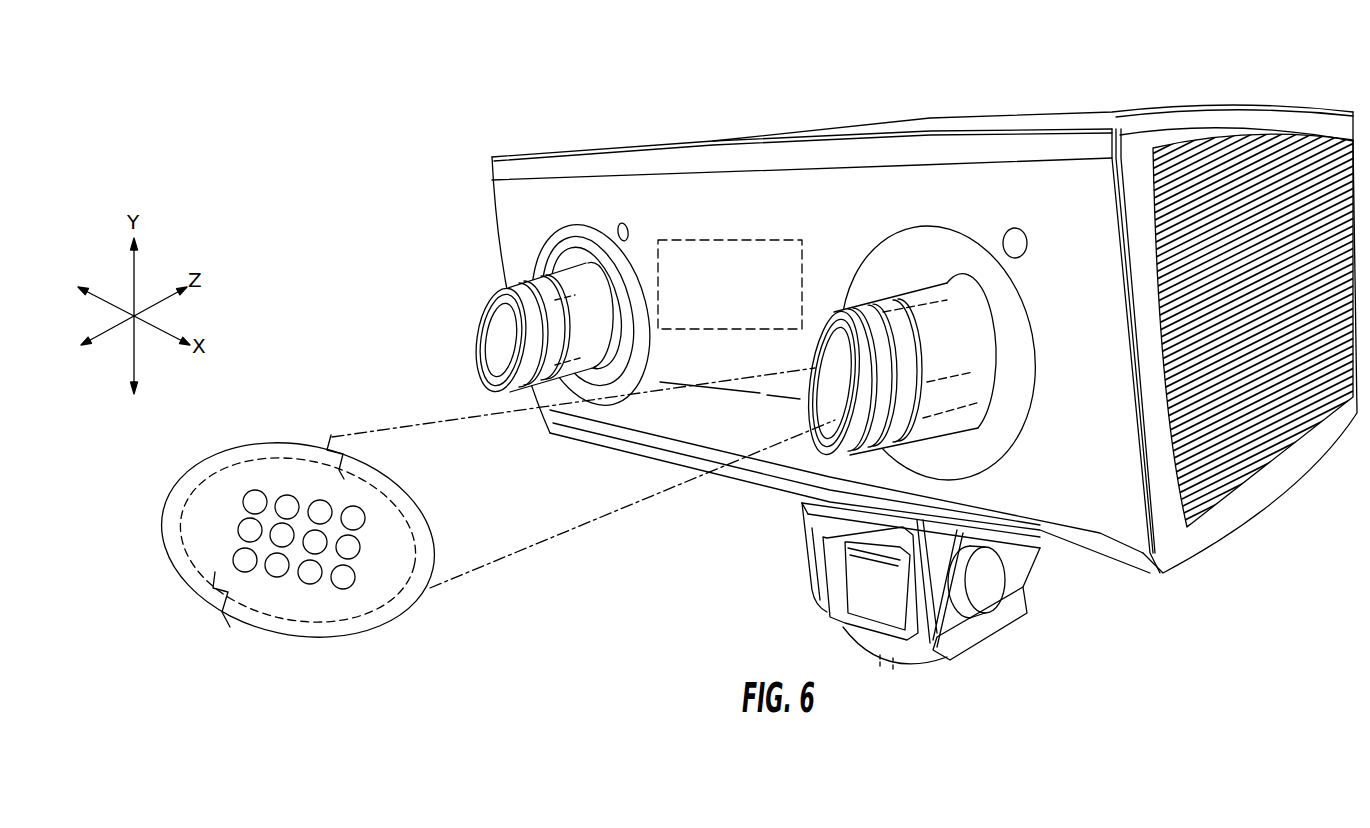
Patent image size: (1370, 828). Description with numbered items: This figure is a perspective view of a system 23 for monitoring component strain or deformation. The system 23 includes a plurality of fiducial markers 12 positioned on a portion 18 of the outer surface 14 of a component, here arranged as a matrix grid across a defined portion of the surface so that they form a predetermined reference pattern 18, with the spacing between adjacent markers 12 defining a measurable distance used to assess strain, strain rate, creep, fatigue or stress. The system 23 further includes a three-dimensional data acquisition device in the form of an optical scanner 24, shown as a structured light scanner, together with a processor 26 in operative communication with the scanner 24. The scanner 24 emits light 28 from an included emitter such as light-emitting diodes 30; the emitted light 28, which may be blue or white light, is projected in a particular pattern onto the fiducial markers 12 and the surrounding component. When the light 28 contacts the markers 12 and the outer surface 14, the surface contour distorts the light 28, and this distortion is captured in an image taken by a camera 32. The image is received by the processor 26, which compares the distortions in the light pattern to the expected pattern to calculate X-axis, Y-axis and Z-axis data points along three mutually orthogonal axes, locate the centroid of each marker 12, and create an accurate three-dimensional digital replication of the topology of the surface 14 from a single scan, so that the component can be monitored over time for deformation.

The system 23 is at (420, 73).
The optical scanner 24 is at (510, 145).
The processor 26 is at (694, 232).
The emitted light 28 is at (645, 515).
The light-emitting diodes 30 is at (923, 296).
The camera 32 is at (478, 294).
The outer surface 14 is at (178, 548).
The fiducial markers 12 is at (299, 590).
The predetermined reference pattern 18 is at (325, 600).